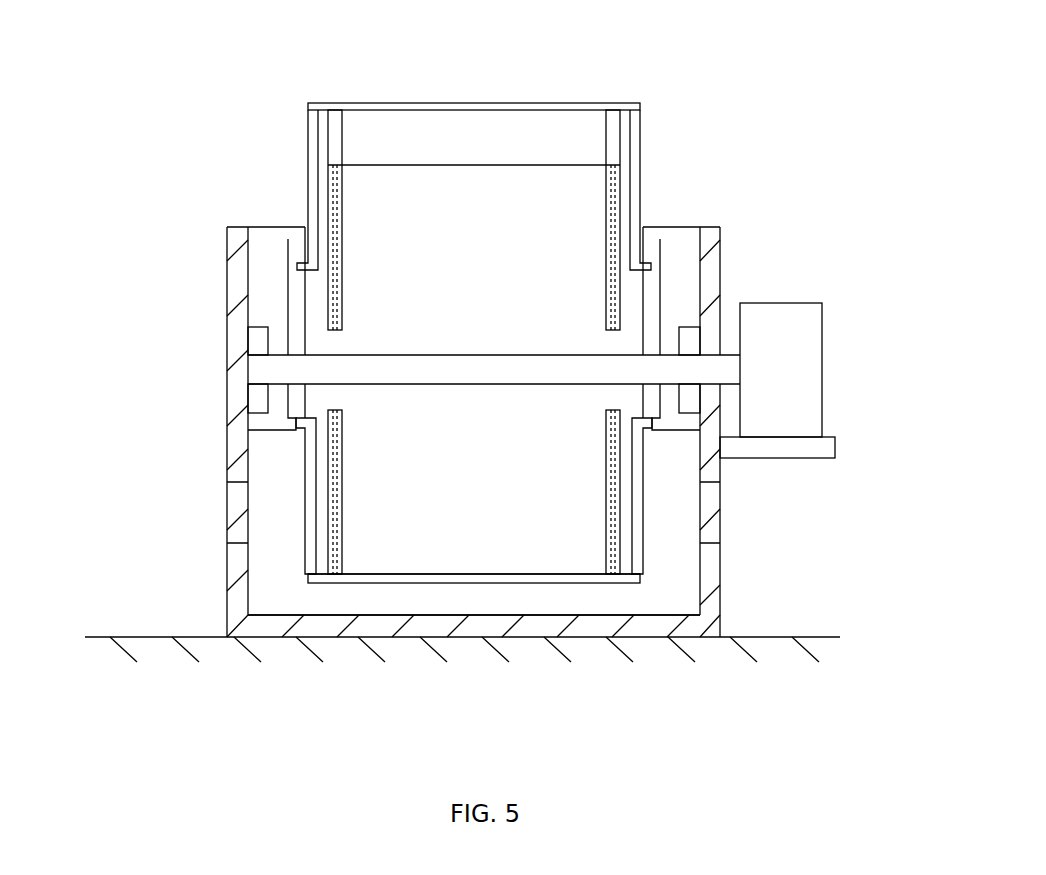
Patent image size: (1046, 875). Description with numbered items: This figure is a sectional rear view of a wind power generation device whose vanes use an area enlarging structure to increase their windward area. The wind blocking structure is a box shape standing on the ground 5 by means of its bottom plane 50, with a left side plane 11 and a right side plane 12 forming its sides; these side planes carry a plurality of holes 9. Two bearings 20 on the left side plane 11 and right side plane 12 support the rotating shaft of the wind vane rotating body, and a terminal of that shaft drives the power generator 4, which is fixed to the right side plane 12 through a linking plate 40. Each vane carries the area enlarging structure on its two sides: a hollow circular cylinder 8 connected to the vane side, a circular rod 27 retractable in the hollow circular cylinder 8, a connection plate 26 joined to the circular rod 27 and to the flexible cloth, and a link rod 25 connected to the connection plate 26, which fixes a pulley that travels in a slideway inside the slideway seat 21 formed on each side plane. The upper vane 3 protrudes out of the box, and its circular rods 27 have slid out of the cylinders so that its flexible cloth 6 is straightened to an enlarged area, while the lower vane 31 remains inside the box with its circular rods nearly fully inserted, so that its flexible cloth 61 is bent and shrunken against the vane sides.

The vane 3 is at (408, 185).
The power generator 4 is at (808, 332).
The ground 5 is at (82, 637).
The flexible cloth 6 is at (518, 103).
The hollow circular cylinder 8 is at (342, 300).
The holes 9 is at (228, 512).
The left side plane 11 is at (228, 440).
The right side plane 12 is at (720, 590).
The bearing 20 is at (262, 340).
The slideway seat 21 is at (296, 227).
The link rod 25 is at (300, 115).
The connection plate 26 is at (320, 103).
The circular rod 27 is at (342, 115).
The vane 31 is at (535, 555).
The linking plate 40 is at (835, 447).
The bottom plane 50 is at (345, 637).
The flexible cloth 61 is at (458, 583).